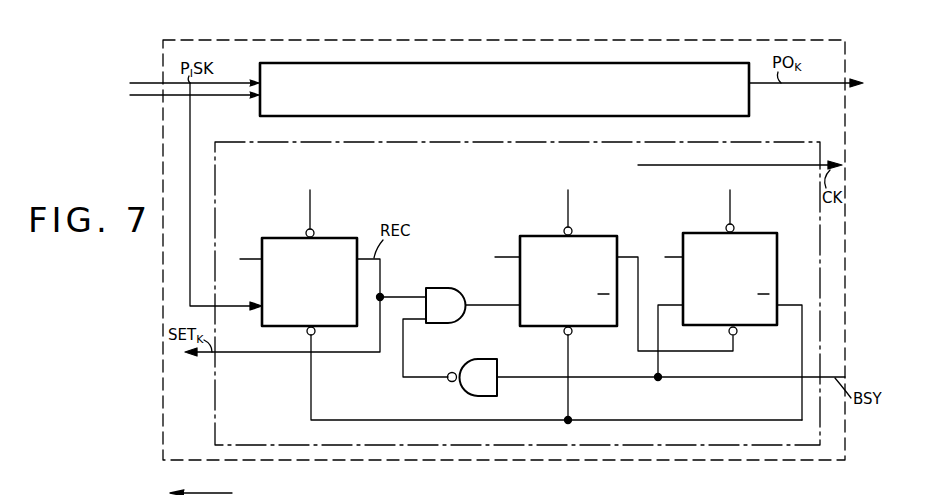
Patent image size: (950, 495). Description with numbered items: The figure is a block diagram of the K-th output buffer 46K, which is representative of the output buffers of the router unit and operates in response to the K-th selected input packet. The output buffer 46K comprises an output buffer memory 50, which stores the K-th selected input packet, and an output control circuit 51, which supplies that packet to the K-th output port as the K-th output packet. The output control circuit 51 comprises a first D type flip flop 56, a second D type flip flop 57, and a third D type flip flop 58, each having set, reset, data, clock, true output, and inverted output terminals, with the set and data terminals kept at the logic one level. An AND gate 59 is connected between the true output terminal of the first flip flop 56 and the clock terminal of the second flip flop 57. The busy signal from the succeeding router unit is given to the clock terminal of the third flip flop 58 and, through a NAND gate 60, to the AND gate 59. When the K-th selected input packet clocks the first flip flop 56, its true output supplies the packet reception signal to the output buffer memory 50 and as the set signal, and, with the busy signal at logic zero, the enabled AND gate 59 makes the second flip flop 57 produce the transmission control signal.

The K-th output buffer 46K is at (163, 408).
The output buffer memory 50 is at (598, 62).
The output control circuit 51 is at (740, 141).
The first D type flip flop 56 is at (331, 238).
The second D type flip flop 57 is at (613, 236).
The third D type flip flop 58 is at (712, 233).
The AND gate 59 is at (444, 288).
The NAND gate 60 is at (473, 359).